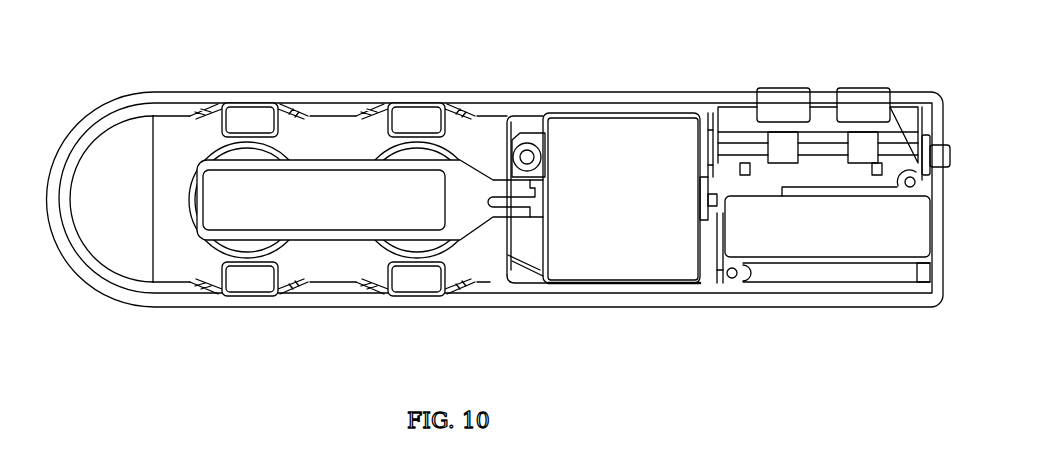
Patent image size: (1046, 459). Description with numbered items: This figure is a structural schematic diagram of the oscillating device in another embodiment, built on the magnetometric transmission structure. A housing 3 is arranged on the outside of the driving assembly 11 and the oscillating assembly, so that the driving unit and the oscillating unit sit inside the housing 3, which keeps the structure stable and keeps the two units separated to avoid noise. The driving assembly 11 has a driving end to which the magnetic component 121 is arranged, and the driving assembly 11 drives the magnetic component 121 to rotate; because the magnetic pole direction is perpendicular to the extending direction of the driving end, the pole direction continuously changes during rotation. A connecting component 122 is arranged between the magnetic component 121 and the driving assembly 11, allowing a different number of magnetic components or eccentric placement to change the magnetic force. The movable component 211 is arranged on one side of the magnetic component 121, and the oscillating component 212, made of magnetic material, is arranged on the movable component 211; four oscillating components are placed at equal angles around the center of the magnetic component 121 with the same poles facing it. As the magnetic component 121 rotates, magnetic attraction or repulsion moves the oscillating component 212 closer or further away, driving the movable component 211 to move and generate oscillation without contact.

The housing 3 is at (636, 298).
The driving assembly 11 is at (626, 190).
The magnetic component 121 is at (388, 197).
The connecting component 122 is at (238, 230).
The movable component 211 is at (418, 257).
The oscillating component 212 is at (252, 120).